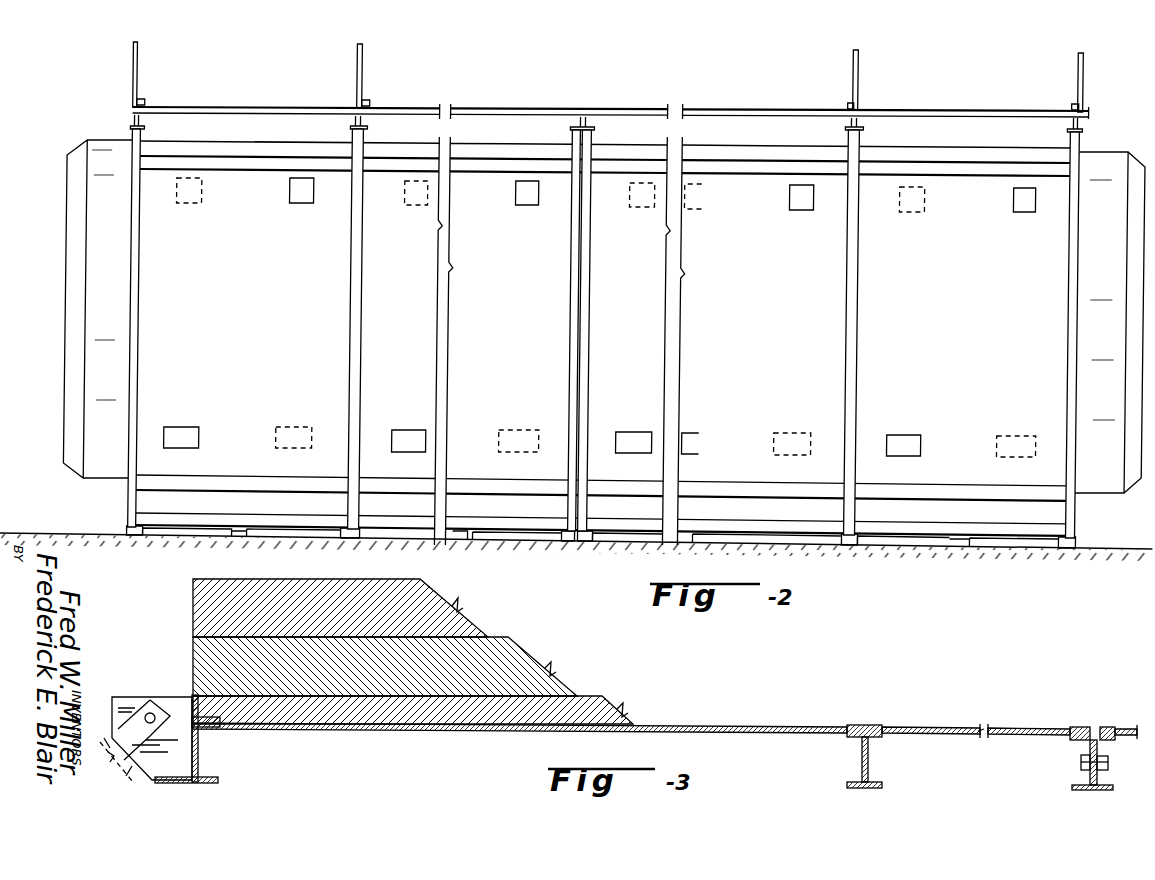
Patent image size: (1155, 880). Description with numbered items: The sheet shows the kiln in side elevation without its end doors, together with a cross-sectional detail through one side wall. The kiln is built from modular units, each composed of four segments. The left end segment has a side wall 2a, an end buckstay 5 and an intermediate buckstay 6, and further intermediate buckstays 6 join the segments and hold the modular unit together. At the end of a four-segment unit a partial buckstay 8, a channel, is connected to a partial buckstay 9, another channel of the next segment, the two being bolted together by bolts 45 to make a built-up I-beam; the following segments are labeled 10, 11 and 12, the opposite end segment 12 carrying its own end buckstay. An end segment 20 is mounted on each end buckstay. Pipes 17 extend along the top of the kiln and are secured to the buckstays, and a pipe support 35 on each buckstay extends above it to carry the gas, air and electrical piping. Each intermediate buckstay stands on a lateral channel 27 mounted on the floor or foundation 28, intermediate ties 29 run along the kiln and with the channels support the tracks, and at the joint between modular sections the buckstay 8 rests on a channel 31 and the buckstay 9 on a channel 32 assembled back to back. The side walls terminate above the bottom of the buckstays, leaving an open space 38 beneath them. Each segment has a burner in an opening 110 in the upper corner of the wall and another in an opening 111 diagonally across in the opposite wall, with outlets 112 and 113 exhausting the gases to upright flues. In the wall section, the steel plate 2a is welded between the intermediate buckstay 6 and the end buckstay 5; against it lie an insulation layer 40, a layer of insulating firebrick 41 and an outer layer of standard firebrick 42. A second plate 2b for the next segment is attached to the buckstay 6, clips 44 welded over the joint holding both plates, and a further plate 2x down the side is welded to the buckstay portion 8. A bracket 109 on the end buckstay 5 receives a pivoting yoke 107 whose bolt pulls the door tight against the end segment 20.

In FIG. 2, the side wall steel plate 2a is at (262, 334).
In FIG. 3, the side wall steel plate 2a is at (420, 732).
In FIG. 2, the second plate 2b is at (408, 334).
In FIG. 3, the second plate 2b is at (927, 737).
In FIG. 2, the panel 2x is at (527, 334).
In FIG. 3, the panel 2x is at (1020, 738).
In FIG. 2, the end buckstay 5 is at (129, 494).
In FIG. 3, the end buckstay 5 is at (200, 755).
In FIG. 2, the intermediate buckstay 6 is at (350, 343).
In FIG. 3, the intermediate buckstay 6 is at (848, 788).
In FIG. 2, the partial buckstay 8 is at (572, 387).
In FIG. 3, the partial buckstay 8 is at (1077, 791).
In FIG. 2, the partial buckstay 9 is at (586, 385).
In FIG. 3, the partial buckstay 9 is at (1108, 789).
In FIG. 2, the panel section 10 is at (642, 334).
In FIG. 2, the panel section 11 is at (783, 334).
In FIG. 2, the opposite end segment 12 is at (975, 339).
In FIG. 2, the pipes 17 is at (215, 107).
In FIG. 2, the end segment 20 is at (92, 330).
In FIG. 2, the lateral channel 27 is at (128, 537).
In FIG. 2, the floor or foundation 28 is at (272, 540).
In FIG. 2, the intermediate ties 29 is at (236, 538).
In FIG. 2, the channel 31 is at (566, 541).
In FIG. 2, the channel 32 is at (596, 545).
In FIG. 2, the pipe support 35 is at (137, 52).
In FIG. 2, the open space 38 is at (234, 512).
In FIG. 3, the insulation layer 40 is at (616, 698).
In FIG. 3, the layer of insulating firebrick 41 is at (563, 678).
In FIG. 3, the layer of standard firebrick 42 is at (484, 621).
In FIG. 3, the clips 44 is at (868, 727).
In FIG. 3, the bolts 45 is at (1082, 763).
In FIG. 3, the yoke 107 is at (134, 783).
In FIG. 3, the bracket 109 is at (178, 705).
In FIG. 2, the opening 110 is at (300, 205).
In FIG. 2, the opening 111 is at (185, 205).
In FIG. 2, the outlet 112 is at (325, 398).
In FIG. 2, the opening 113 is at (185, 427).